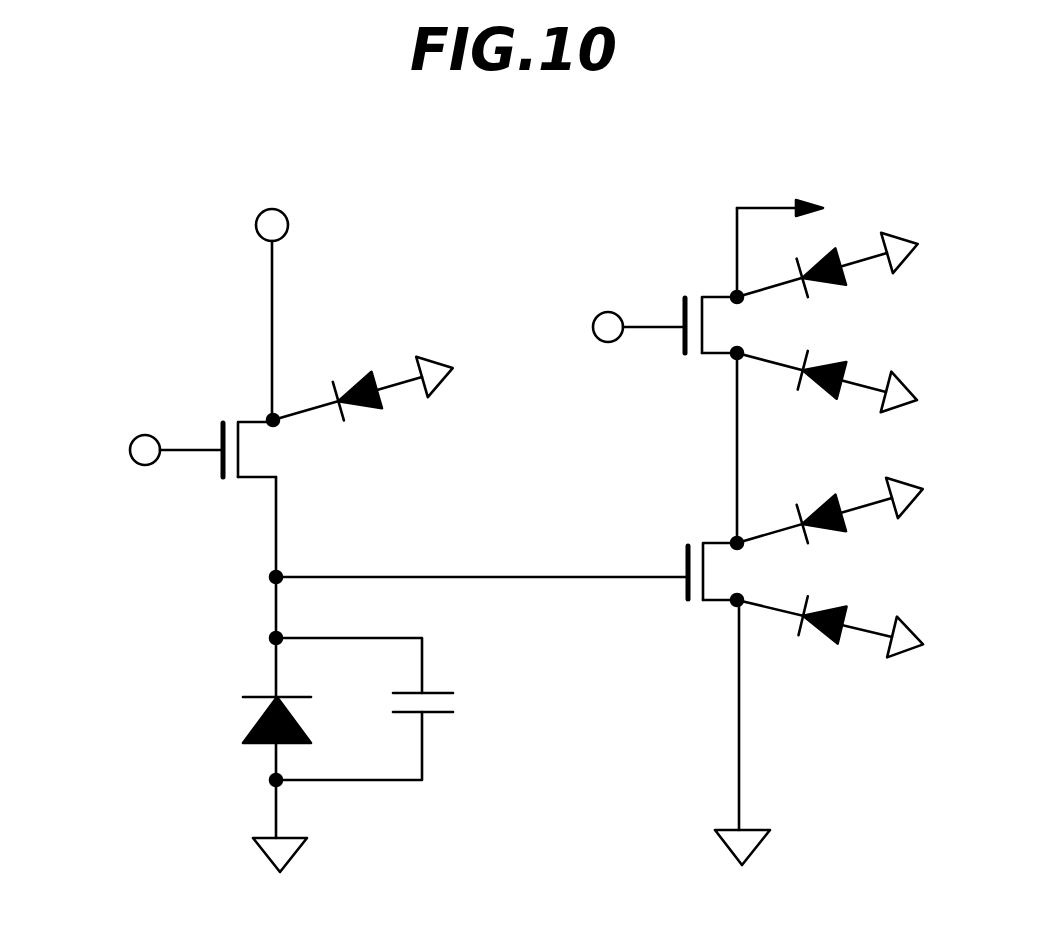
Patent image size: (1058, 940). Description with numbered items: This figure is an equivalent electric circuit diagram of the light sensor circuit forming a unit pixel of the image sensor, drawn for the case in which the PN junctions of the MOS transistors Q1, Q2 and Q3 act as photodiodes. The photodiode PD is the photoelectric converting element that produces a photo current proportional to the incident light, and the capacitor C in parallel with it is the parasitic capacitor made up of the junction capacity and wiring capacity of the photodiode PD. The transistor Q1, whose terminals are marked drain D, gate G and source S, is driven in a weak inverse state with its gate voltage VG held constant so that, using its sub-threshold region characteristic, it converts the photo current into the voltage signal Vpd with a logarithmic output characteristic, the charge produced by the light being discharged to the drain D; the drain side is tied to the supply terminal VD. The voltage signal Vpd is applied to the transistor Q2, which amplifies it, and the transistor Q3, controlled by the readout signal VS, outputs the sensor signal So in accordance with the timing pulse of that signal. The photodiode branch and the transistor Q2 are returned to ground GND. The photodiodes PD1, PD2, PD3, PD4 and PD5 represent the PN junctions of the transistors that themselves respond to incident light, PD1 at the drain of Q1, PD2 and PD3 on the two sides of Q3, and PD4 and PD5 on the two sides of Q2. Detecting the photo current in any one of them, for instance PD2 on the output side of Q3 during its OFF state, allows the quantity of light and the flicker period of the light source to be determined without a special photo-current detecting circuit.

The drain supply voltage terminal VD is at (272, 203).
The gate voltage VG is at (149, 449).
The readout signal VS is at (614, 324).
The transistor Q1 is at (223, 431).
The transistor Q2 is at (708, 549).
The transistor Q3 is at (704, 303).
The drain D is at (239, 396).
The gate of transistor Q1 G is at (202, 476).
The source of transistor Q1 S is at (245, 507).
The photodiode PD is at (250, 720).
The photodiode PD1 is at (363, 375).
The photodiode PD2 is at (837, 281).
The photodiode PD3 is at (837, 408).
The photodiode PD4 is at (839, 526).
The photodiode PD5 is at (839, 654).
The parasitic capacitor C is at (384, 709).
The voltage signal Vpd is at (482, 555).
The output signal So is at (803, 206).
The ground GND is at (516, 874).